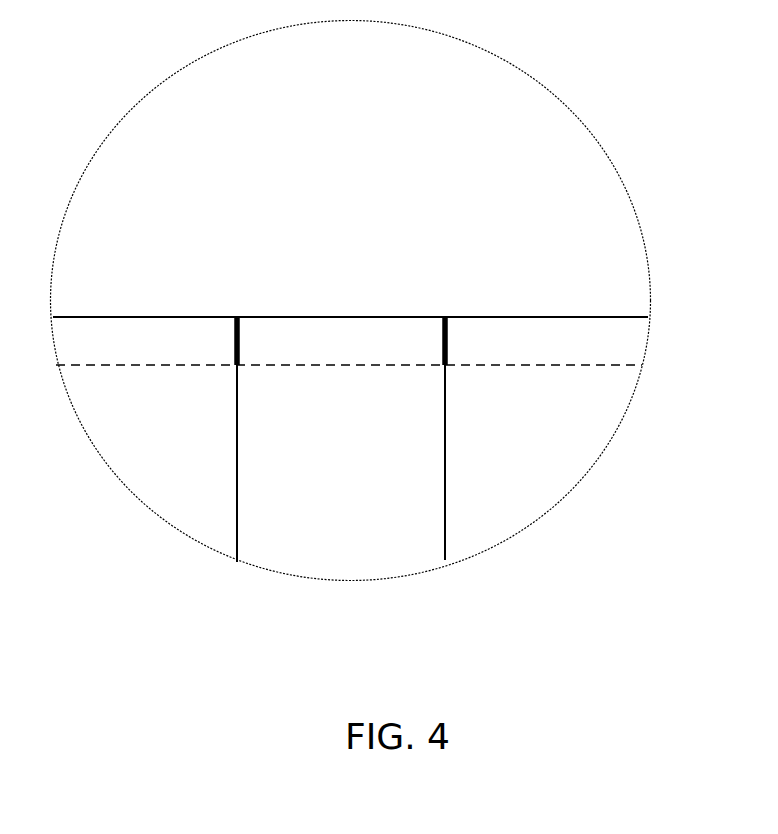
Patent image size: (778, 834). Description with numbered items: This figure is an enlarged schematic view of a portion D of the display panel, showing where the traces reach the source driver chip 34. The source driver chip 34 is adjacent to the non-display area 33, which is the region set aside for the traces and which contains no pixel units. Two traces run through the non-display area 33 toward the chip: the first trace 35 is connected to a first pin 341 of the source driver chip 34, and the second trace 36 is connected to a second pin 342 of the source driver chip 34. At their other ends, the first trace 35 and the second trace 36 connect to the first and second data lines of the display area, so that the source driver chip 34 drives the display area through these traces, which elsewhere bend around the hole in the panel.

The portion D is at (138, 104).
The source driver chip 34 is at (562, 170).
The non-display area 33 is at (620, 365).
The first pin 341 is at (237, 340).
The second pin 342 is at (443, 330).
The first trace 35 is at (445, 495).
The second trace 36 is at (237, 490).